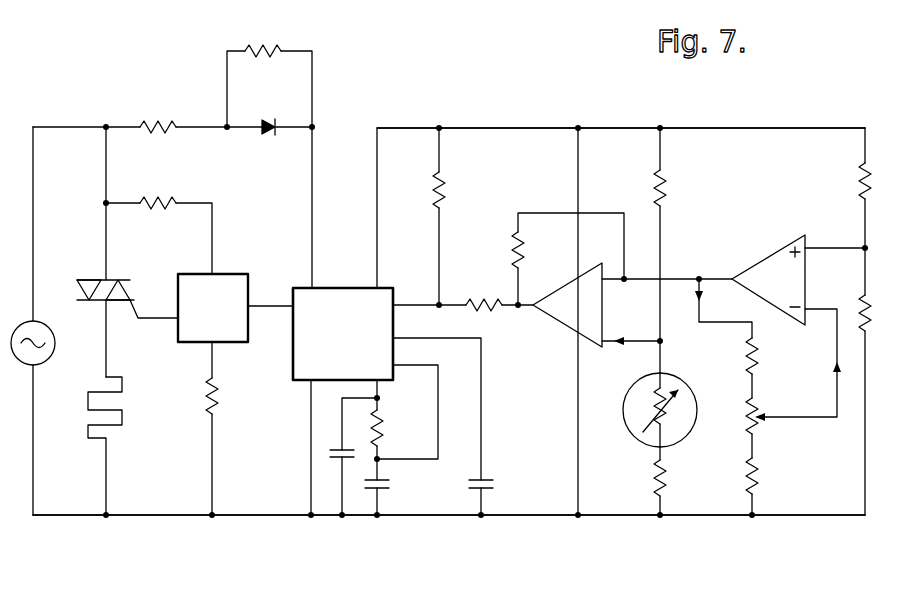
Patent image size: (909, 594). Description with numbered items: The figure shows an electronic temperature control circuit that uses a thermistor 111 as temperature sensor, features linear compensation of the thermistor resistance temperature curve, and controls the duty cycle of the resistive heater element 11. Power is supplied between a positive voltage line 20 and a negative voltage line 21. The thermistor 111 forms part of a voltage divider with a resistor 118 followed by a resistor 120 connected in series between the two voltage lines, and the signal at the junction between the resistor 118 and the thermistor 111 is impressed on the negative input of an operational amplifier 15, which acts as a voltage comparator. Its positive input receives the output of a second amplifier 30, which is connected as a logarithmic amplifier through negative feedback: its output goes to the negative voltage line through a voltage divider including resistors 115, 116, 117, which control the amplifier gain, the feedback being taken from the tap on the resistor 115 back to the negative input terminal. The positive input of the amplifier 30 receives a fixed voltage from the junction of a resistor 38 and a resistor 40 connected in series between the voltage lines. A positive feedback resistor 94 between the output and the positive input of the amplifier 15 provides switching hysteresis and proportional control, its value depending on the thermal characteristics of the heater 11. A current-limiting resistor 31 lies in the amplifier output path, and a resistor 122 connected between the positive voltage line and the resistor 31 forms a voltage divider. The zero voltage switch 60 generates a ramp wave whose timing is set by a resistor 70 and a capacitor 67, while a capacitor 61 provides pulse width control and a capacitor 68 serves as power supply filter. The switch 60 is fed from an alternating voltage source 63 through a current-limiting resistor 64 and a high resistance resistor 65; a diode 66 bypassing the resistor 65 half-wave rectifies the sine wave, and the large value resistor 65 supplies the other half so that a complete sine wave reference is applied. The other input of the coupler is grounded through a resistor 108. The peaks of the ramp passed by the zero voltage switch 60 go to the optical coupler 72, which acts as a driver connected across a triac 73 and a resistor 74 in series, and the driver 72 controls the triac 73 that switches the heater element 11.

The heater element 11 is at (103, 437).
The operational amplifier 15 is at (567, 323).
The positive voltage line 20 is at (518, 127).
The negative voltage line 21 is at (553, 520).
The second amplifier 30 is at (760, 262).
The current-limiting resistor 31 is at (488, 310).
The resistor 38 is at (860, 310).
The resistor 40 is at (860, 184).
The zero voltage switch 60 is at (293, 340).
The capacitor 61 is at (485, 483).
The alternating voltage source 63 is at (50, 364).
The current-limiting resistor 64 is at (172, 125).
The high resistance resistor 65 is at (276, 50).
The diode 66 is at (266, 135).
The capacitor 67 is at (384, 487).
The capacitor 68 is at (336, 453).
The resistor 70 is at (380, 440).
The optical coupler 72 is at (247, 274).
The triac 73 is at (90, 278).
The resistor 74 is at (156, 202).
The positive feedback resistor 94 is at (515, 254).
The resistor 108 is at (214, 408).
The thermistor 111 is at (630, 436).
The resistor 115 is at (762, 364).
The resistor 116 is at (760, 418).
The resistor 117 is at (762, 484).
The resistor 118 is at (666, 196).
The resistor 120 is at (668, 482).
The resistor 122 is at (450, 200).